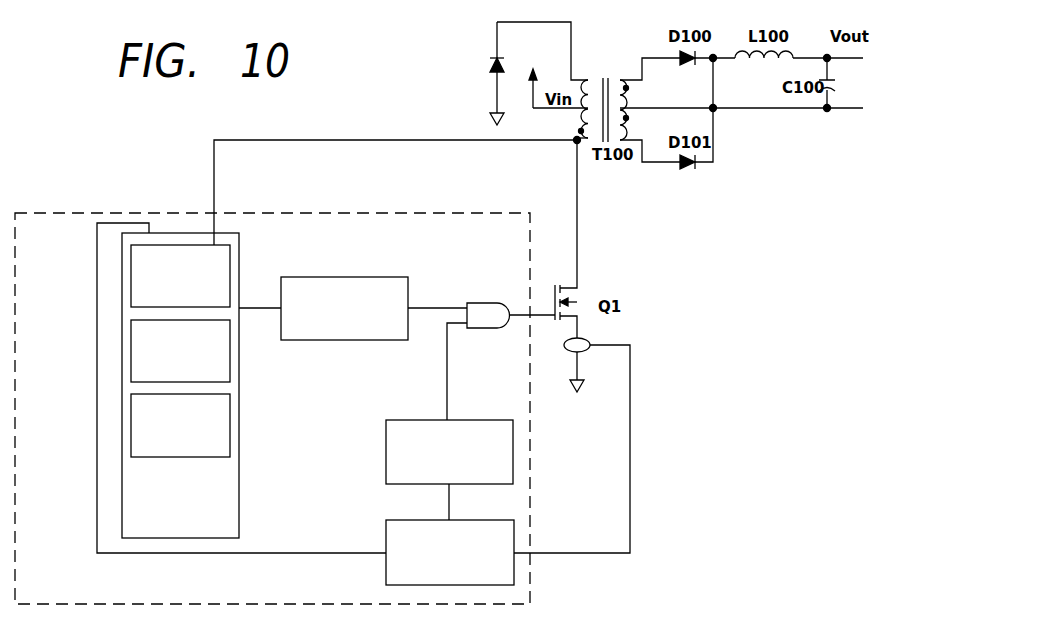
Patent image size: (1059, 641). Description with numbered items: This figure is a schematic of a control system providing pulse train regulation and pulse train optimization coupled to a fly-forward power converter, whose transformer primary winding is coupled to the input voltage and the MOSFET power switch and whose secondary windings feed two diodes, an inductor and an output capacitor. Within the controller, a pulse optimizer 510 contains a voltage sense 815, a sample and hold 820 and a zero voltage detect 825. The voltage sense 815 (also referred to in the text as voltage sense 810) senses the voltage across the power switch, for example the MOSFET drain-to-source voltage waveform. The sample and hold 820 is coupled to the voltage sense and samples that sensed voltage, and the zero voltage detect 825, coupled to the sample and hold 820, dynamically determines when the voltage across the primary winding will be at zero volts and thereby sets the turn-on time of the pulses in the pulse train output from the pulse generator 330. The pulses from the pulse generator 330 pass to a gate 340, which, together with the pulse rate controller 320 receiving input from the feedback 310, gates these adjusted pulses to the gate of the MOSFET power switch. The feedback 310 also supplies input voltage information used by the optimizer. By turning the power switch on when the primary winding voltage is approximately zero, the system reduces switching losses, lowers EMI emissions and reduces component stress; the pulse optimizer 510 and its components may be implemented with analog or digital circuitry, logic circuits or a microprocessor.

The voltage sense 810 is at (73, 210).
The voltage sense 815 is at (131, 280).
The sample and hold 820 is at (131, 352).
The zero voltage detect 825 is at (131, 427).
The pulse optimizer 510 is at (183, 540).
The pulse generator 330 is at (345, 340).
The gate 340 is at (489, 330).
The pulse rate controller 320 is at (386, 453).
The feedback 310 is at (386, 538).